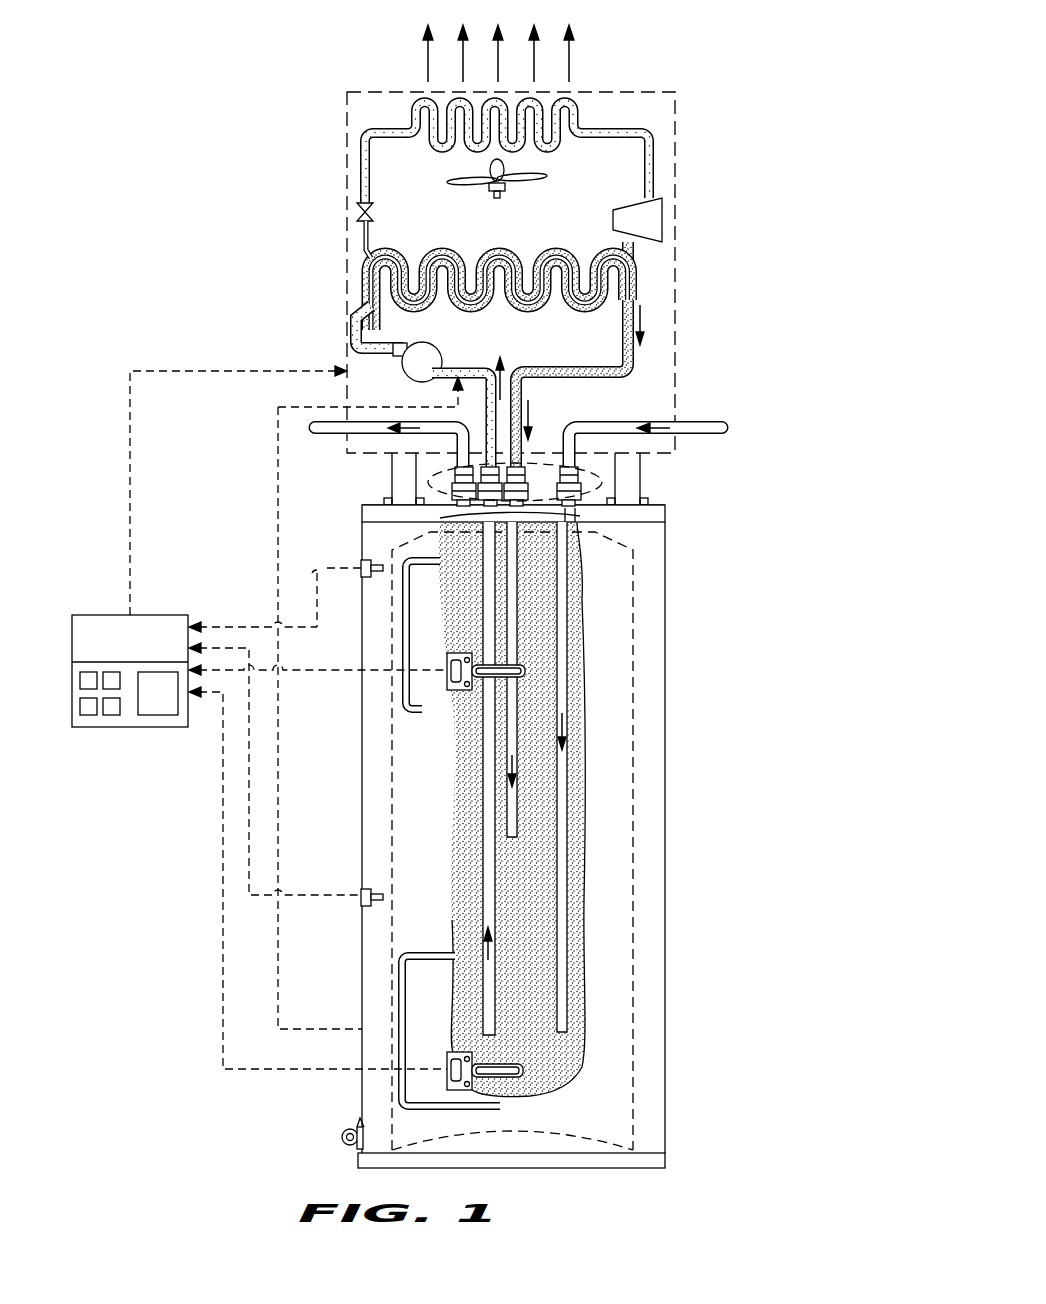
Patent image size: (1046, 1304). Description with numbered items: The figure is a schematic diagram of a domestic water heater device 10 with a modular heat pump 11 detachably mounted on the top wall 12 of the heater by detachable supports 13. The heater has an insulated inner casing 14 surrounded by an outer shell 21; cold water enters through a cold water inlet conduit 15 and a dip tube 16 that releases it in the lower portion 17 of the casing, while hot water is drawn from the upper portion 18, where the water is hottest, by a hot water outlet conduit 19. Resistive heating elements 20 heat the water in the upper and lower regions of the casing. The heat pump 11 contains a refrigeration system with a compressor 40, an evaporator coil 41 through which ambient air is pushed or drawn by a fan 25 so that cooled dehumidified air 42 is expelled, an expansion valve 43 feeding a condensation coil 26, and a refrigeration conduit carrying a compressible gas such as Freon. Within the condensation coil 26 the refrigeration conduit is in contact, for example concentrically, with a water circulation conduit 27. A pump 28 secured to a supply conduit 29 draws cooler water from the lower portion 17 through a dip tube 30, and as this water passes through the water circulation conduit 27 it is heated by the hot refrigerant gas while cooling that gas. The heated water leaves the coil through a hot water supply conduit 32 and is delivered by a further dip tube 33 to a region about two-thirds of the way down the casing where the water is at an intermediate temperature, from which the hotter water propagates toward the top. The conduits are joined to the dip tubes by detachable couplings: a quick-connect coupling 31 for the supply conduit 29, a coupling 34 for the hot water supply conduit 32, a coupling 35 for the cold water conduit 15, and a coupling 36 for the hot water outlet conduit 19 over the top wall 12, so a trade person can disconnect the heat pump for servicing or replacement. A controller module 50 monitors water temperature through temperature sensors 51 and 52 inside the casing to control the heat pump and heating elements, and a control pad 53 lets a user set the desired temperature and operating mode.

The water heater device 10 is at (584, 845).
The heat pump 11 is at (683, 152).
The top wall 12 is at (662, 506).
The detachable supports 13 is at (642, 468).
The inner casing 14 is at (640, 597).
The cold water inlet conduit 15 is at (695, 420).
The dip tube 16 is at (562, 913).
The lower portion 17 is at (523, 1017).
The upper portion 18 is at (540, 628).
The hot water outlet conduit 19 is at (330, 427).
The resistive heating element 20 is at (452, 680).
The outer shell 21 is at (667, 973).
The fan 25 is at (522, 181).
The condensation coil 26 is at (497, 271).
The water circulation conduit 27 is at (540, 312).
The pump 28 is at (418, 358).
The supply conduit 29 is at (462, 372).
The dip tube 30 is at (487, 915).
The quick-connect coupling 31 is at (455, 470).
The hot water supply conduit 32 is at (563, 367).
The dip tube 33 is at (512, 645).
The detachable coupling 34 is at (530, 470).
The detachable coupling 35 is at (575, 508).
The detachable coupling 36 is at (470, 518).
The compressor 40 is at (650, 215).
The evaporator coil 41 is at (412, 108).
The cooled dehumidified air 42 is at (575, 68).
The expansion valve 43 is at (355, 212).
The controller module 50 is at (247, 717).
The temperature sensor 51 is at (355, 583).
The temperature sensor 52 is at (357, 903).
The control pad 53 is at (100, 728).